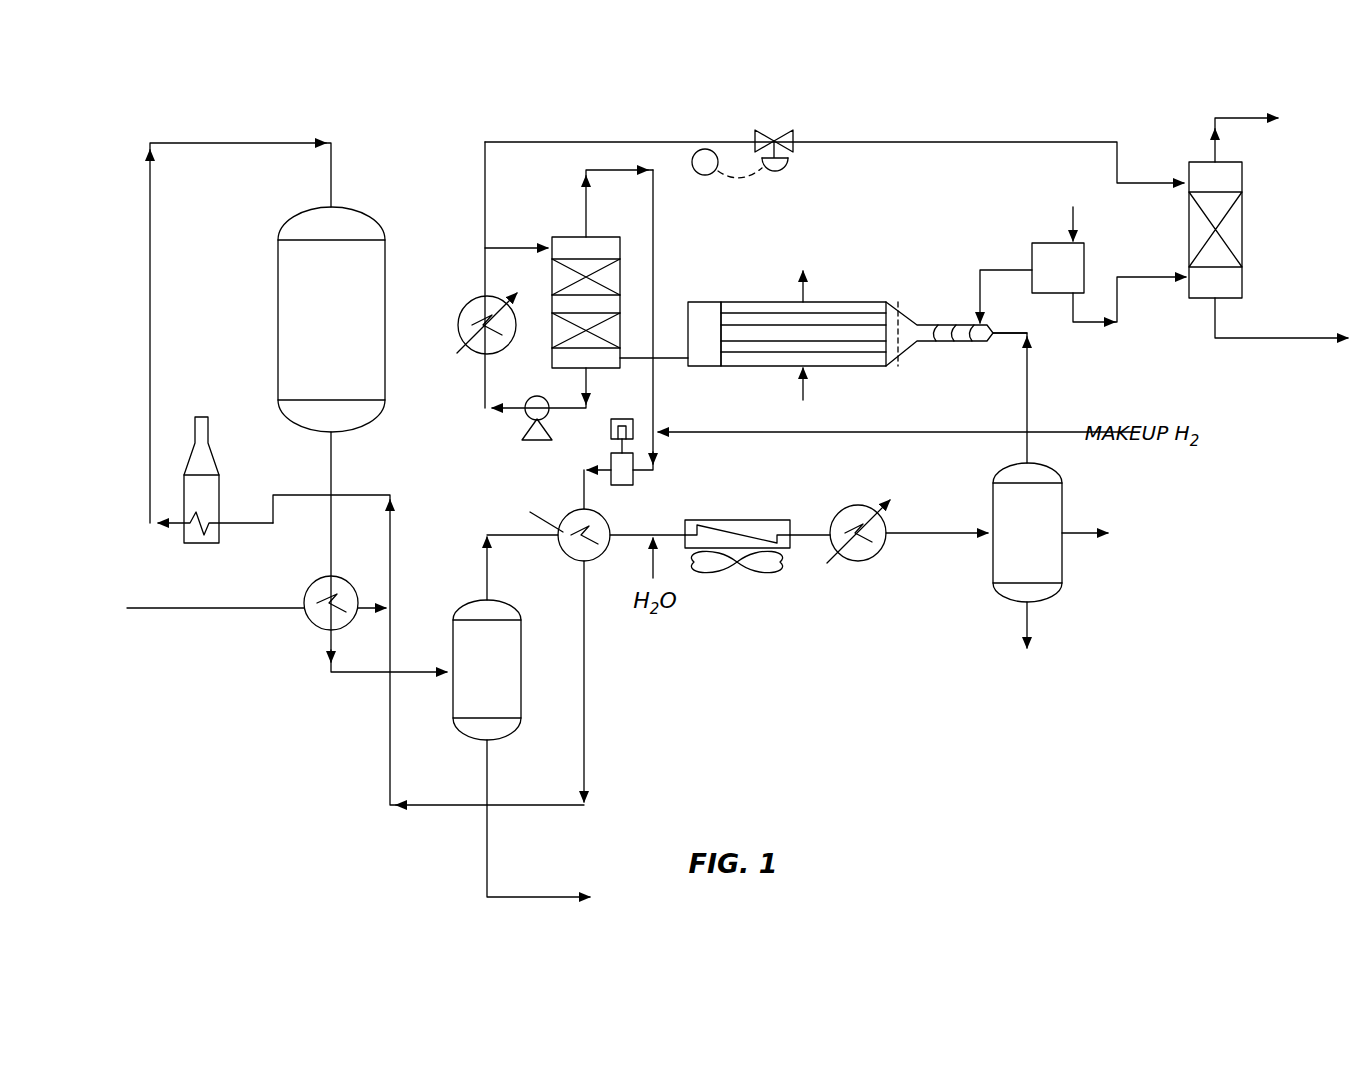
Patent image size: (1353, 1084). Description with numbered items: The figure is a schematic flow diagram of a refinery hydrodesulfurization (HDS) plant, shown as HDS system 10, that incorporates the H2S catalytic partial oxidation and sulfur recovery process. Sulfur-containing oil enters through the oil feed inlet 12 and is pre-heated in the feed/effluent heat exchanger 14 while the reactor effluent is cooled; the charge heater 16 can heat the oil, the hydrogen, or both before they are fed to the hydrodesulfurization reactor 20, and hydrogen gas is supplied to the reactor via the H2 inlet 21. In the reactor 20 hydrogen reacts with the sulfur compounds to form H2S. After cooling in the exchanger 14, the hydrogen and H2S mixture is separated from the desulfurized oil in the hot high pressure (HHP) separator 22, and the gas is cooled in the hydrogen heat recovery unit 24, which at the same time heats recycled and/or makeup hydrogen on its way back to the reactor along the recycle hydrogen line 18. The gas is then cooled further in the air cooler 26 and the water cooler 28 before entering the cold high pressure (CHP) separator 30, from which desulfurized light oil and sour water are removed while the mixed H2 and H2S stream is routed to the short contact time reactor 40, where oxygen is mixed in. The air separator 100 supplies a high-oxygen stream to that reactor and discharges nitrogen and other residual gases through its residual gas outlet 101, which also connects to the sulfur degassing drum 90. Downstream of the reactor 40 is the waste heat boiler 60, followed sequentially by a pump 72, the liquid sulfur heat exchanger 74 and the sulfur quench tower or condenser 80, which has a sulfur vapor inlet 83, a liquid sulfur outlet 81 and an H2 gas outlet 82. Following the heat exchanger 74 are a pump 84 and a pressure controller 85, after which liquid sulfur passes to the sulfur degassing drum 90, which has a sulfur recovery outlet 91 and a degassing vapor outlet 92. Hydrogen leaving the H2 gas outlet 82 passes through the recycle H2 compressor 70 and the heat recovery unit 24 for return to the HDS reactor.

The HDS system 10 is at (750, 688).
The oil feed inlet 12 is at (157, 610).
The feed/effluent heat exchanger 14 is at (317, 607).
The charge heater 16 is at (208, 502).
The hydrogen recycle line 18 is at (387, 690).
The hydrodesulfurization reactor 20 is at (331, 319).
The H2 inlet 21 is at (337, 205).
The hot high pressure separator 22 is at (449, 680).
The hydrogen heat recovery unit 24 is at (590, 552).
The air cooler 26 is at (737, 520).
The water cooler 28 is at (875, 558).
The cold high pressure separator 30 is at (1062, 507).
The short contact time reactor 40 is at (928, 343).
The waste heat boiler 60 is at (752, 298).
The recycle H2 compressor 70 is at (622, 475).
The pump 72 is at (532, 412).
The liquid sulfur heat exchanger 74 is at (472, 313).
The sulfur condenser 80 is at (570, 235).
The liquid sulfur outlet 81 is at (588, 372).
The H2 gas outlet 82 is at (588, 233).
The sulfur vapor inlet 83 is at (547, 251).
The pump 84 is at (703, 148).
The pressure controller 85 is at (776, 136).
The sulfur degassing drum 90 is at (1242, 227).
The sulfur recovery outlet 91 is at (1217, 300).
The degassing vapor outlet 92 is at (1217, 155).
The air separator 100 is at (1109, 281).
The residual gas outlet 101 is at (1055, 297).